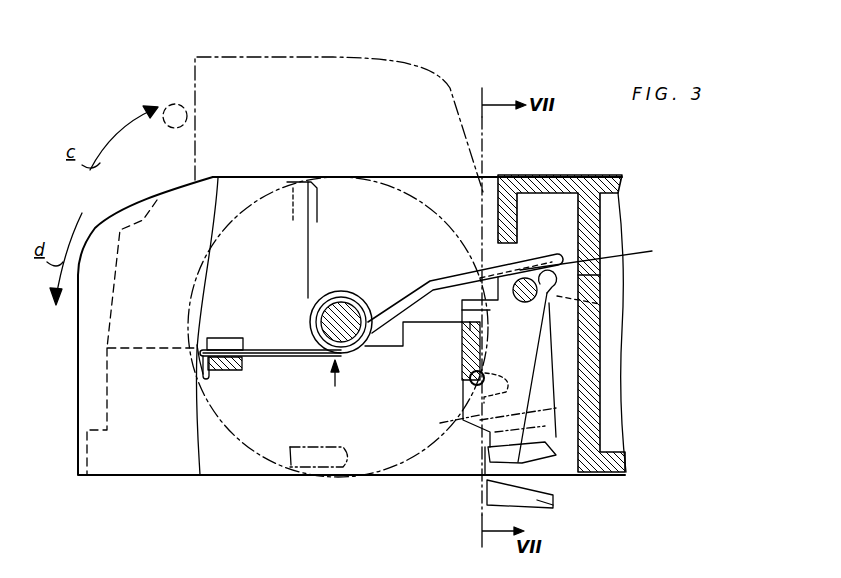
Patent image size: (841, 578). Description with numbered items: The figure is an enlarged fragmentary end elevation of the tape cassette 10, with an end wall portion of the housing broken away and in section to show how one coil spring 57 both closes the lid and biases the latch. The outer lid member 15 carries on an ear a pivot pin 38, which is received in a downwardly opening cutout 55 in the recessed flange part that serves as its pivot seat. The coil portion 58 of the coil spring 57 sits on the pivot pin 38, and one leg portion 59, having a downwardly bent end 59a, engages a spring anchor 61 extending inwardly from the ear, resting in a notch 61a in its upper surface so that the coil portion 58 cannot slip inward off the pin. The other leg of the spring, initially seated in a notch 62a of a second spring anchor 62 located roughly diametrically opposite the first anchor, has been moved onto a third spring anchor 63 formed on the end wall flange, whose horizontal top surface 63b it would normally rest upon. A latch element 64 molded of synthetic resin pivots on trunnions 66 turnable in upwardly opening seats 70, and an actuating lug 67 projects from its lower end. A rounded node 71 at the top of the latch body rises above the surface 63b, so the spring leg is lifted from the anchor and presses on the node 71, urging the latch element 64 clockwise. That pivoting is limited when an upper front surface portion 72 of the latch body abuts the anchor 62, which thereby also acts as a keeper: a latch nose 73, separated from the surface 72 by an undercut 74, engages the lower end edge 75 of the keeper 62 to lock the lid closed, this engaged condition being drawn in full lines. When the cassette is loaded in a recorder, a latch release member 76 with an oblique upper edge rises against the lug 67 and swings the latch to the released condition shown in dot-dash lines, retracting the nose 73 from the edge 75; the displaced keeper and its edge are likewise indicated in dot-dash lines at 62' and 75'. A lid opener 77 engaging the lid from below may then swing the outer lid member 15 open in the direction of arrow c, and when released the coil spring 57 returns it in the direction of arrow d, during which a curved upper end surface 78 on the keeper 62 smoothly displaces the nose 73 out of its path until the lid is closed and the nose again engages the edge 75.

The tape cassette 10 is at (590, 80).
The outer lid member 15 is at (295, 68).
The pivot pin 38 is at (322, 322).
The cutout 55 is at (354, 318).
The coil spring 57 is at (325, 383).
The coil portion 58 is at (337, 290).
The leg portion 59 is at (279, 358).
The downwardly bent end 59a is at (207, 362).
The spring anchor 61 is at (212, 372).
The notch 61a is at (232, 330).
The second spring anchor 62 is at (448, 380).
The notch 62a is at (462, 340).
The pawl alternate position 62' is at (319, 484).
The third spring anchor 63 is at (446, 296).
The horizontal top surface 63b is at (472, 284).
The latch element 64 is at (565, 348).
The trunnions 66 is at (527, 279).
The actuating lug 67 is at (553, 443).
The seats 70 is at (605, 319).
The node 71 is at (560, 288).
The upper front surface portion 72 is at (483, 313).
The latch nose 73 is at (485, 405).
The undercut 74 is at (485, 374).
The lower end edge 75 is at (447, 410).
The spring tab alternate position 75' is at (263, 478).
The latch release member 76 is at (556, 504).
The lid opener 77 is at (178, 104).
The curved upper end surface 78 is at (476, 328).